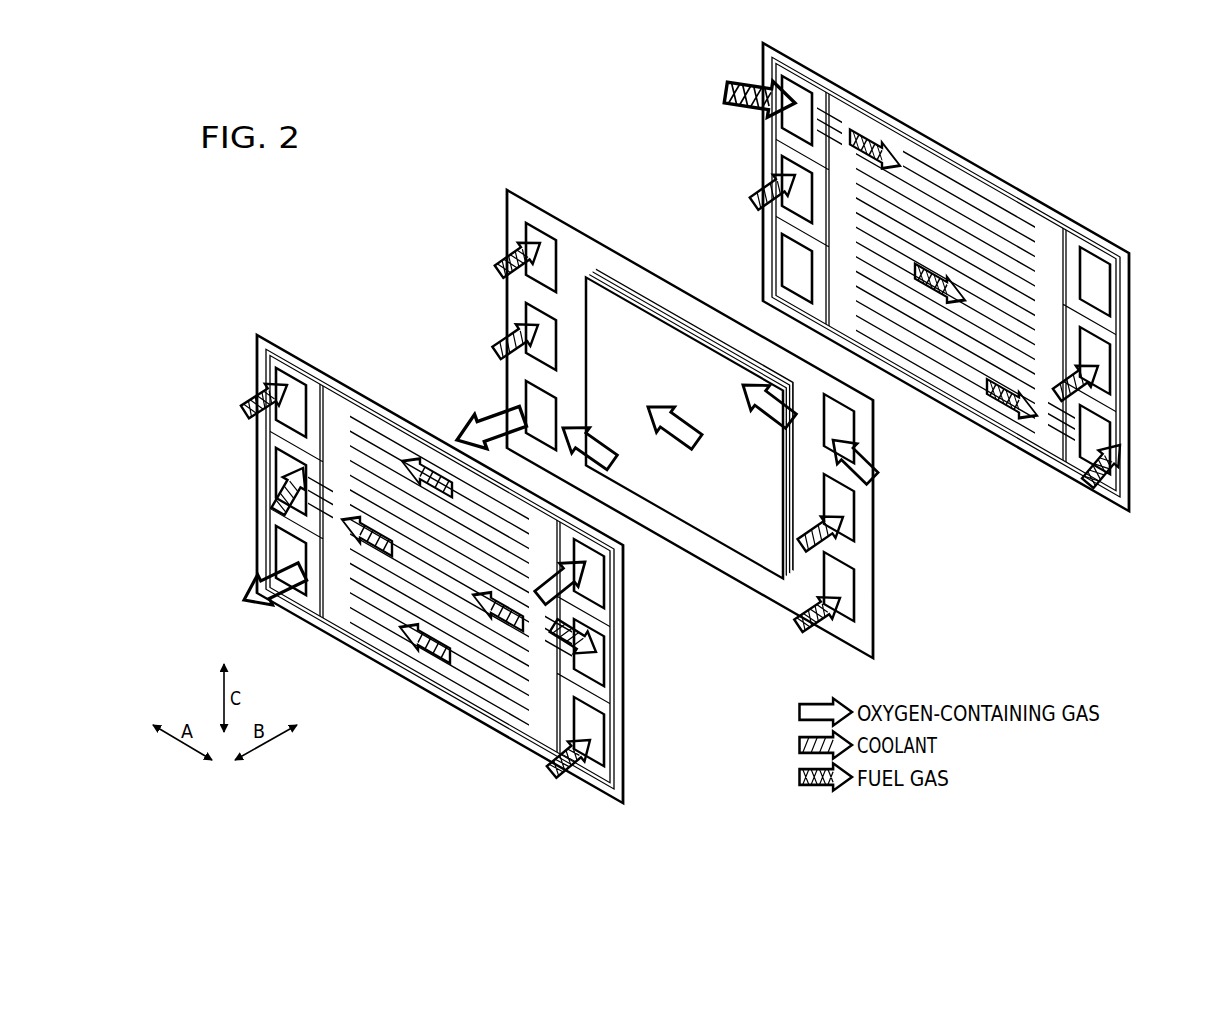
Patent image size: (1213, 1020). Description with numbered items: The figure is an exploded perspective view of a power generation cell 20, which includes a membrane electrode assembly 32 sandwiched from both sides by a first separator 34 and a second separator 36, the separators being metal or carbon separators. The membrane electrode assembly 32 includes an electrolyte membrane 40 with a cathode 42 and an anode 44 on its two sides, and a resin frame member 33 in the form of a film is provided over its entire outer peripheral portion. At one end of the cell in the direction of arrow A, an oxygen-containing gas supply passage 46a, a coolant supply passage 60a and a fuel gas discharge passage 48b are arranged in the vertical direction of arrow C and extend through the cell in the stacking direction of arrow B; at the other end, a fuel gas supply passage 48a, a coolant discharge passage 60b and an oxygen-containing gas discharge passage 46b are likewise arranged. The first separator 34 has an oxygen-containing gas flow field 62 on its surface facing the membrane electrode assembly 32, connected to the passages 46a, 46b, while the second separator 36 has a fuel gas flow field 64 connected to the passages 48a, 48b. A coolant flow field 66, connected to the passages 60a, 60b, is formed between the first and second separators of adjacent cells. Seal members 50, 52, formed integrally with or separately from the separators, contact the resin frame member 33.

The power generation cell 20 is at (360, 226).
The membrane electrode assembly 32 is at (677, 378).
The resin frame member 33 is at (592, 252).
The first separator 34 is at (254, 338).
The second separator 36 is at (760, 57).
The electrolyte membrane 40 is at (687, 355).
The cathode 42 is at (627, 318).
The anode 44 is at (660, 302).
The oxygen-containing gas supply passage 46a is at (593, 590).
The oxygen-containing gas discharge passage 46b is at (283, 546).
The fuel gas supply passage 48a is at (283, 383).
The fuel gas discharge passage 48b is at (593, 733).
The seal member 50 is at (370, 386).
The seal member 52 is at (975, 178).
The coolant supply passage 60a is at (593, 666).
The coolant discharge passage 60b is at (283, 466).
The oxygen-containing gas flow field 62 is at (462, 640).
The fuel gas flow field 64 is at (968, 372).
The coolant flow field 66 is at (375, 610).